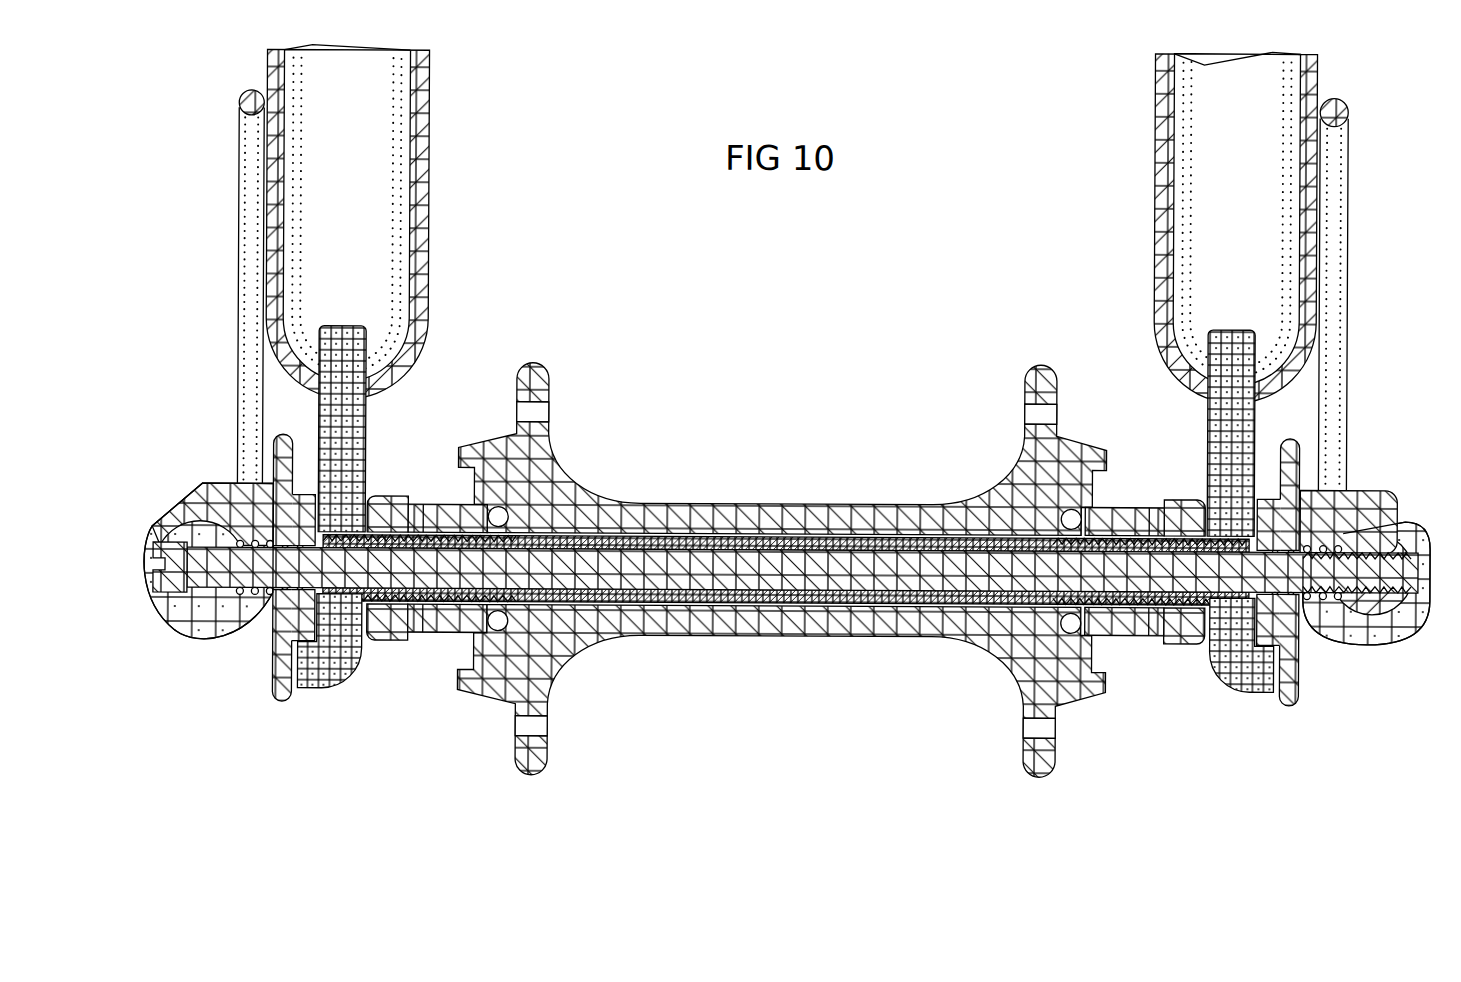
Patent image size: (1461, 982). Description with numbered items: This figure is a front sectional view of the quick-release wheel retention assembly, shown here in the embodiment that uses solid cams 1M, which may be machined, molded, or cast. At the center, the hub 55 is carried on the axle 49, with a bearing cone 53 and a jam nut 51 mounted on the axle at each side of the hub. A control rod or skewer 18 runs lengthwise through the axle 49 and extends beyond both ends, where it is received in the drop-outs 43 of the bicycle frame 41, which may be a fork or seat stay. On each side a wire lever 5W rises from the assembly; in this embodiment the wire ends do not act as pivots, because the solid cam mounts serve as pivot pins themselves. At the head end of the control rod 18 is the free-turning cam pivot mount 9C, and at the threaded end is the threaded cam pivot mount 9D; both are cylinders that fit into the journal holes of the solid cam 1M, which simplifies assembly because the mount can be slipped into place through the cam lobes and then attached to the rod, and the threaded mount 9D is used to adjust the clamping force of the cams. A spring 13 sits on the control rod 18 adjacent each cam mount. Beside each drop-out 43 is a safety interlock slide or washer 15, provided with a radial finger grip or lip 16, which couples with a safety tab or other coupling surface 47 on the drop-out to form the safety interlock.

The bicycle frame 41 is at (370, 109).
The wire lever 5W is at (243, 222).
The drop-out 43 is at (360, 442).
The hub 55 is at (980, 483).
The axle 49 is at (857, 543).
The jam nut 51 is at (385, 647).
The bearing cone 53 is at (436, 647).
The cam pivot mount for solid cam on head of control rod 9C is at (183, 521).
The cam pivot mount for solid cam on threaded end of control rod 9D is at (1390, 540).
The spring 13 is at (240, 530).
The control rod or skewer 18 is at (748, 565).
The radial finger grip or lip on slide 16 is at (272, 700).
The safety interlock slide or washer 15 is at (270, 633).
The safety tab or other coupling surface on drop-out 47 is at (303, 686).
The solid cam 1M is at (185, 643).